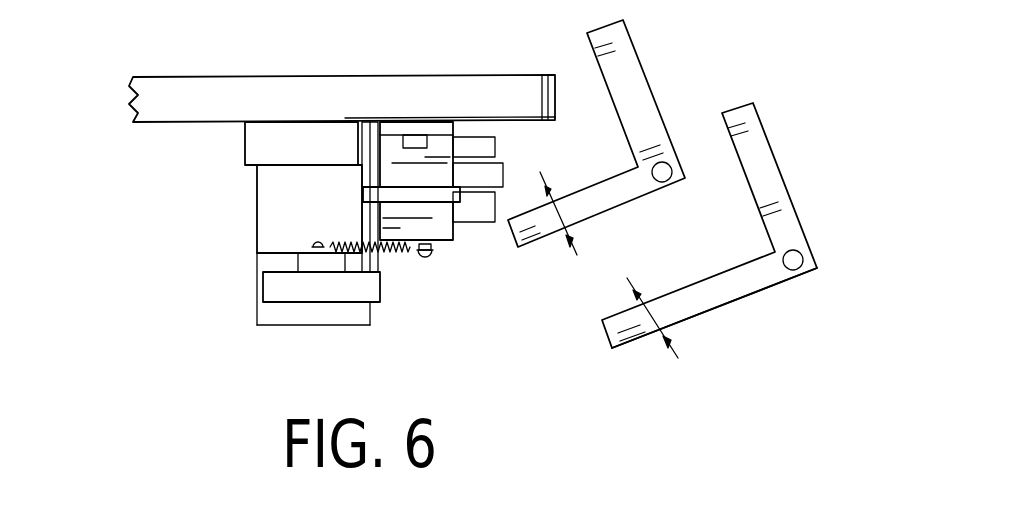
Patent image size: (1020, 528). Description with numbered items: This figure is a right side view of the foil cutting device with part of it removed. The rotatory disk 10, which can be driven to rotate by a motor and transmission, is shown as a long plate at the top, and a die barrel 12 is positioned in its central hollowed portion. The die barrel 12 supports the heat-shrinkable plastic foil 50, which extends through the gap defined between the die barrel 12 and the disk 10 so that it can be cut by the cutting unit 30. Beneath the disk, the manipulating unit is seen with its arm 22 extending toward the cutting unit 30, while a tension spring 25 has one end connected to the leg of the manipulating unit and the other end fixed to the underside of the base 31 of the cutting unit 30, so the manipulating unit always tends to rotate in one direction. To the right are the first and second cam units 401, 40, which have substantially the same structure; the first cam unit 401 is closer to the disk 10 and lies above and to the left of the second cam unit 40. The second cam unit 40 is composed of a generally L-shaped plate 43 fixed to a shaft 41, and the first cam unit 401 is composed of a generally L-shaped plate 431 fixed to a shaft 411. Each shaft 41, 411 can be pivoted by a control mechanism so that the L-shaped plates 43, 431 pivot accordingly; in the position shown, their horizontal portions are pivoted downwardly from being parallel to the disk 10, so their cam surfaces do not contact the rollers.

The rotatory disk 10 is at (133, 98).
The die barrel 12 is at (257, 178).
The heat-shrinkable plastic foil 50 is at (257, 232).
The arm 22 is at (438, 193).
The tension spring 25 is at (390, 255).
The base 31 is at (418, 232).
The cutting unit 30 is at (508, 202).
The second cam unit 40 is at (806, 205).
The first cam unit 401 is at (683, 130).
The shaft 41 is at (806, 259).
The shaft 411 is at (663, 183).
The L-shaped plate 43 is at (742, 300).
The L-shaped plate 431 is at (607, 202).